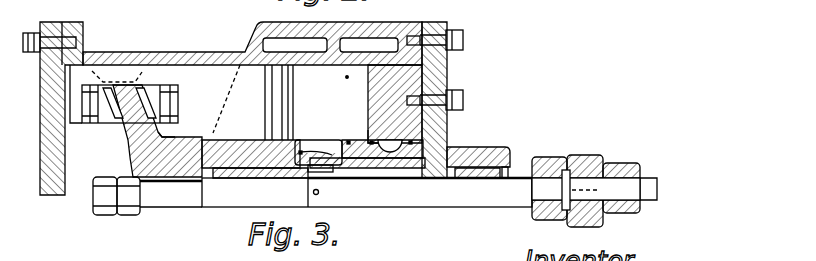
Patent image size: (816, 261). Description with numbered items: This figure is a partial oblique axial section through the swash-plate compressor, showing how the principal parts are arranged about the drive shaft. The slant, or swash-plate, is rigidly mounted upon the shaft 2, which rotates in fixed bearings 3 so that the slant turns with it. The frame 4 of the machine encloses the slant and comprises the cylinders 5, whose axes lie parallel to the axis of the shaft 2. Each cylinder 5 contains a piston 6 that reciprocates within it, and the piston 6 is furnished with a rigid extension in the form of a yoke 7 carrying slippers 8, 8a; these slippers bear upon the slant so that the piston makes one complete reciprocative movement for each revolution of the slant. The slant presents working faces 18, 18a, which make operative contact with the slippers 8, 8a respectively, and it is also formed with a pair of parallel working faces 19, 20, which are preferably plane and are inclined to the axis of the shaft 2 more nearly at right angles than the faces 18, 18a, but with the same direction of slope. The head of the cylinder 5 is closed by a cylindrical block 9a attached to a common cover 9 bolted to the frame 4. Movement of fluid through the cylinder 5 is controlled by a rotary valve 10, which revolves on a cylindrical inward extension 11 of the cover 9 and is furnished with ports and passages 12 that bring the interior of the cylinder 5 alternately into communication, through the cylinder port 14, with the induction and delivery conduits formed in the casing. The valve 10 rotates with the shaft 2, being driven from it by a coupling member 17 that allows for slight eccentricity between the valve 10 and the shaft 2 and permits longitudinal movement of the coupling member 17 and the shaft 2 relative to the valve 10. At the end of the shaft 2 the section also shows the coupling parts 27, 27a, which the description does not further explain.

The shaft 2 is at (429, 192).
The fixed bearings 3 is at (235, 178).
The frame 4 is at (253, 42).
The cylinder 5 is at (324, 102).
The piston 6 is at (227, 77).
The yoke 7 is at (120, 72).
The slipper 8 is at (105, 84).
The slipper 8a is at (142, 82).
The cover 9 is at (448, 127).
The cylindrical block 9a is at (404, 70).
The rotary valve 10 is at (370, 156).
The cylindrical inward extension 11 is at (373, 170).
The port and passage 12 is at (315, 138).
The cylinder port 14 is at (363, 136).
The coupling member 17 is at (322, 170).
The working face 18 is at (127, 120).
The working face 18a is at (157, 130).
The parallel working face 19 is at (132, 156).
The parallel working face 20 is at (220, 131).
The coupling nut 27 is at (550, 158).
The coupling sleeve 27a is at (612, 155).